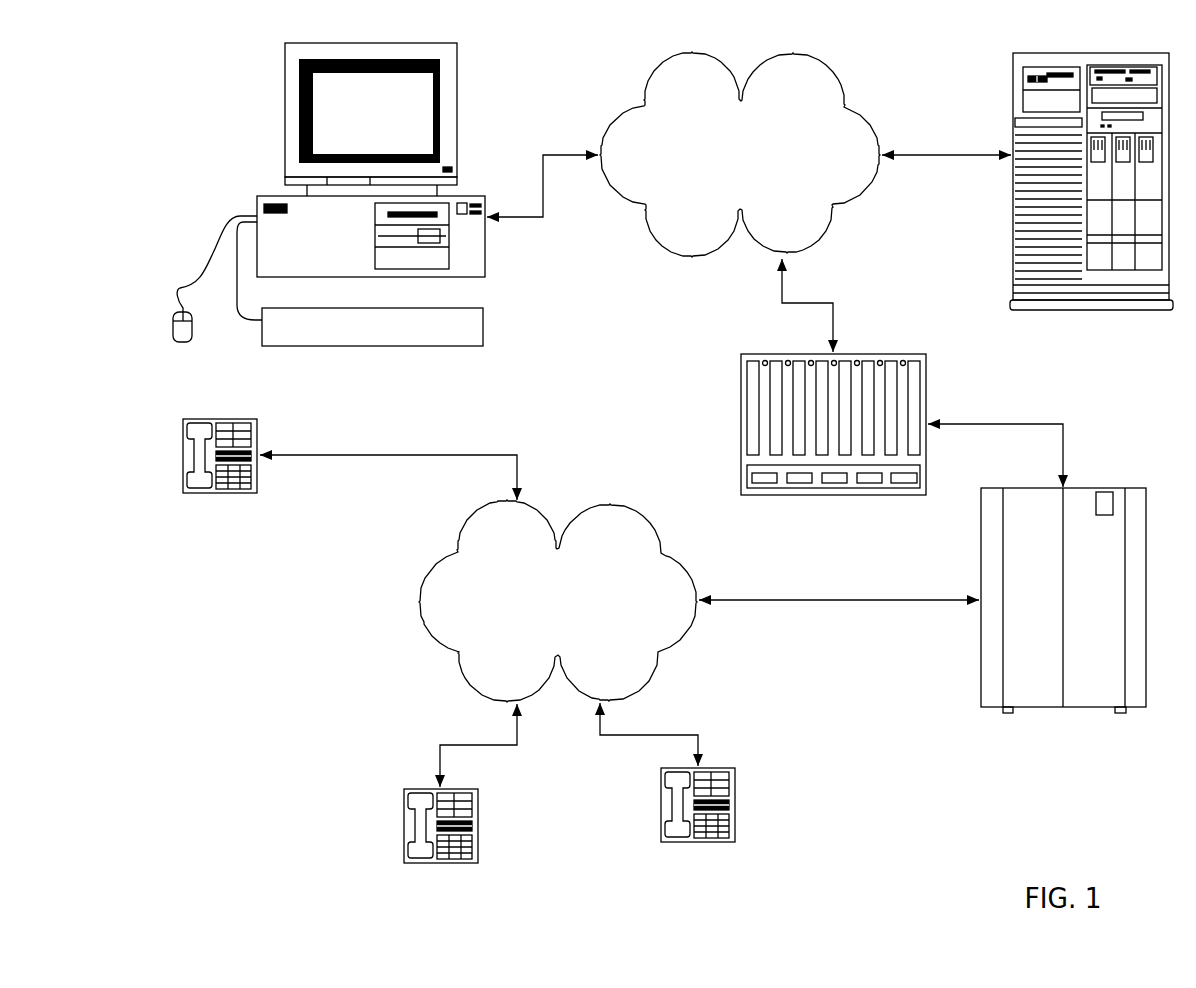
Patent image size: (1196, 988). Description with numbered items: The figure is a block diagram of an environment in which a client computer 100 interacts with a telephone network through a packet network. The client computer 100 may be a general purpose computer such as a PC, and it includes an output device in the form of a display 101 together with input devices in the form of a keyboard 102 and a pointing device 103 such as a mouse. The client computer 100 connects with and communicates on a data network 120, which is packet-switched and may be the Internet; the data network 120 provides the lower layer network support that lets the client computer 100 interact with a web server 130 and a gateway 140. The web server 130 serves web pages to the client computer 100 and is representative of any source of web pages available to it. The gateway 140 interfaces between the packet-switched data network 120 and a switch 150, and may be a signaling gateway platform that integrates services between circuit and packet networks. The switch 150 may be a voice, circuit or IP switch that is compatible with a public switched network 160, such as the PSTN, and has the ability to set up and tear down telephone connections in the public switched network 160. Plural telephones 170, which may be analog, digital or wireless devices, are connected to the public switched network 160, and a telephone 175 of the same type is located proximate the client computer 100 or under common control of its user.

The client computer 100 is at (185, 118).
The display 101 is at (285, 78).
The keyboard 102 is at (260, 341).
The pointing device 103 is at (174, 321).
The data network 120 is at (740, 154).
The web server 130 is at (1099, 201).
The gateway 140 is at (833, 439).
The switch 150 is at (1063, 615).
The public switched network 160 is at (558, 601).
The telephones 170 is at (570, 831).
The telephone 175 is at (221, 471).